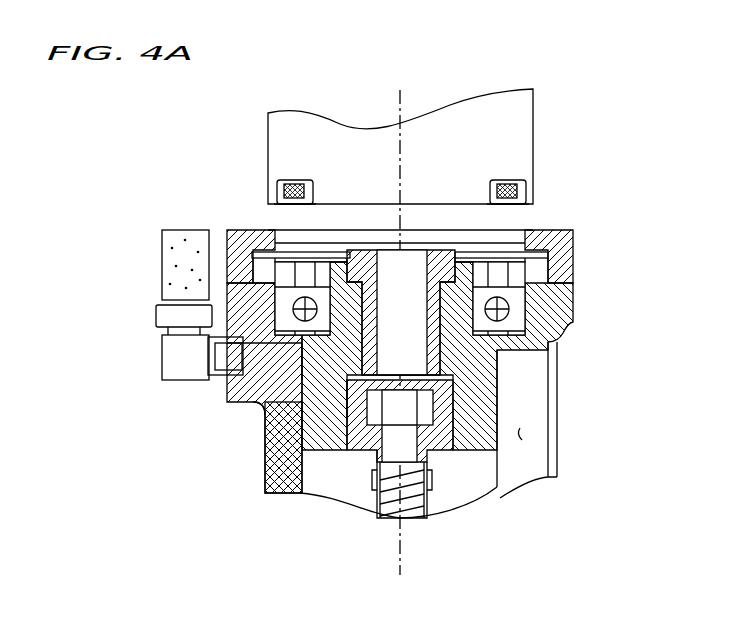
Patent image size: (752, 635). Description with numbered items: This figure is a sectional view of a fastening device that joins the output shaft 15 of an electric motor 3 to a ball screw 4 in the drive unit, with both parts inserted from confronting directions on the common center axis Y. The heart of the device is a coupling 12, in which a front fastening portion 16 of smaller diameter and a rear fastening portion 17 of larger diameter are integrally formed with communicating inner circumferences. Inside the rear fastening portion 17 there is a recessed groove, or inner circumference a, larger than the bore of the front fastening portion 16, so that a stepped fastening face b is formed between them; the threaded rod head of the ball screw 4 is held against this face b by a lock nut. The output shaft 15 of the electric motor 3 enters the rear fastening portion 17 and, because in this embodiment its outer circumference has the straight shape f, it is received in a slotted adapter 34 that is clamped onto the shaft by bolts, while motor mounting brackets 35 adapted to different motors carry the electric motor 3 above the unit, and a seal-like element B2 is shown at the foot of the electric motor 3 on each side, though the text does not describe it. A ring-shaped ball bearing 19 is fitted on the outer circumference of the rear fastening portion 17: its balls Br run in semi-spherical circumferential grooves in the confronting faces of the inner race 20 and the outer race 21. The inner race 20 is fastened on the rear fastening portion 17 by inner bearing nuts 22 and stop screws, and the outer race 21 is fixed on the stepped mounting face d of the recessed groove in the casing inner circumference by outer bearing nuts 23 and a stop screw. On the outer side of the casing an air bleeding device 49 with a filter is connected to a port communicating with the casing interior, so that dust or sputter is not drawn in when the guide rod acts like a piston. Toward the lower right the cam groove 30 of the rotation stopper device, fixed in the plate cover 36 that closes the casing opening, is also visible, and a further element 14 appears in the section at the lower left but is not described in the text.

The electric motor 3 is at (527, 116).
The seal member B2 is at (513, 177).
The motor mounting bracket 35 is at (230, 240).
The inner bearing nut 22 is at (310, 256).
The outer bearing nut 23 is at (325, 285).
The plate cover 36 is at (560, 458).
The output shaft 15 is at (572, 318).
The adapter 34 is at (568, 287).
The inner race 20 is at (300, 308).
The front fastening portion 16 is at (450, 412).
The rear fastening portion 17 is at (480, 355).
The coupling 12 is at (678, 356).
The ball screw 4 is at (410, 493).
The cam groove 30 is at (522, 432).
The locknut 14 is at (340, 470).
The air bleeding device 49 is at (167, 262).
The outer race 21 is at (210, 312).
The balls Br is at (225, 340).
The ball bearing 19 is at (58, 266).
The stepped mounting face d is at (262, 378).
The straight shape f is at (300, 368).
The inner circumference a is at (350, 398).
The stepped fastening face b is at (372, 460).
The center axis Y is at (398, 601).